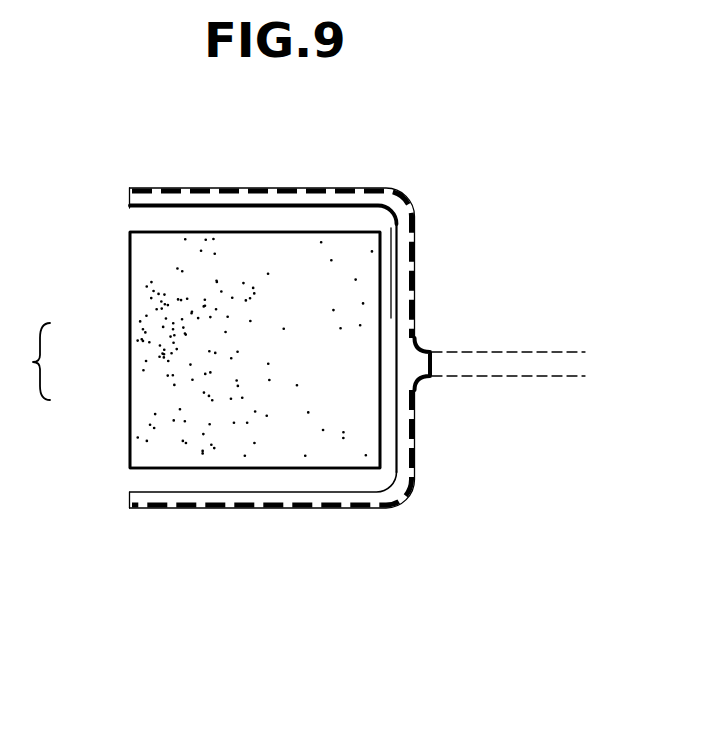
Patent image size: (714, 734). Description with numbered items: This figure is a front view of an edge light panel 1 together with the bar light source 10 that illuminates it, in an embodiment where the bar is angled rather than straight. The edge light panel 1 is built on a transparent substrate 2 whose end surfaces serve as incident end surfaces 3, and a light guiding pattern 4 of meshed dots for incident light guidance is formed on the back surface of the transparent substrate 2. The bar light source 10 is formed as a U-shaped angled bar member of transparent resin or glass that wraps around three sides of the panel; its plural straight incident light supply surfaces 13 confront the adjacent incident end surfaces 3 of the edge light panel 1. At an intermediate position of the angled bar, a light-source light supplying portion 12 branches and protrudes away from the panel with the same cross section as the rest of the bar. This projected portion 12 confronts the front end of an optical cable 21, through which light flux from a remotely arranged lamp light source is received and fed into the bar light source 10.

The edge light panel 1 is at (28, 361).
The transparent substrate 2 is at (130, 338).
The incident end surface 3 is at (211, 232).
The light guiding pattern 4 is at (176, 389).
The bar light source 10 is at (417, 481).
The light-source light supplying portion 12 is at (432, 365).
The incident light supply surface 13 is at (331, 203).
The optical cable 21 is at (565, 378).